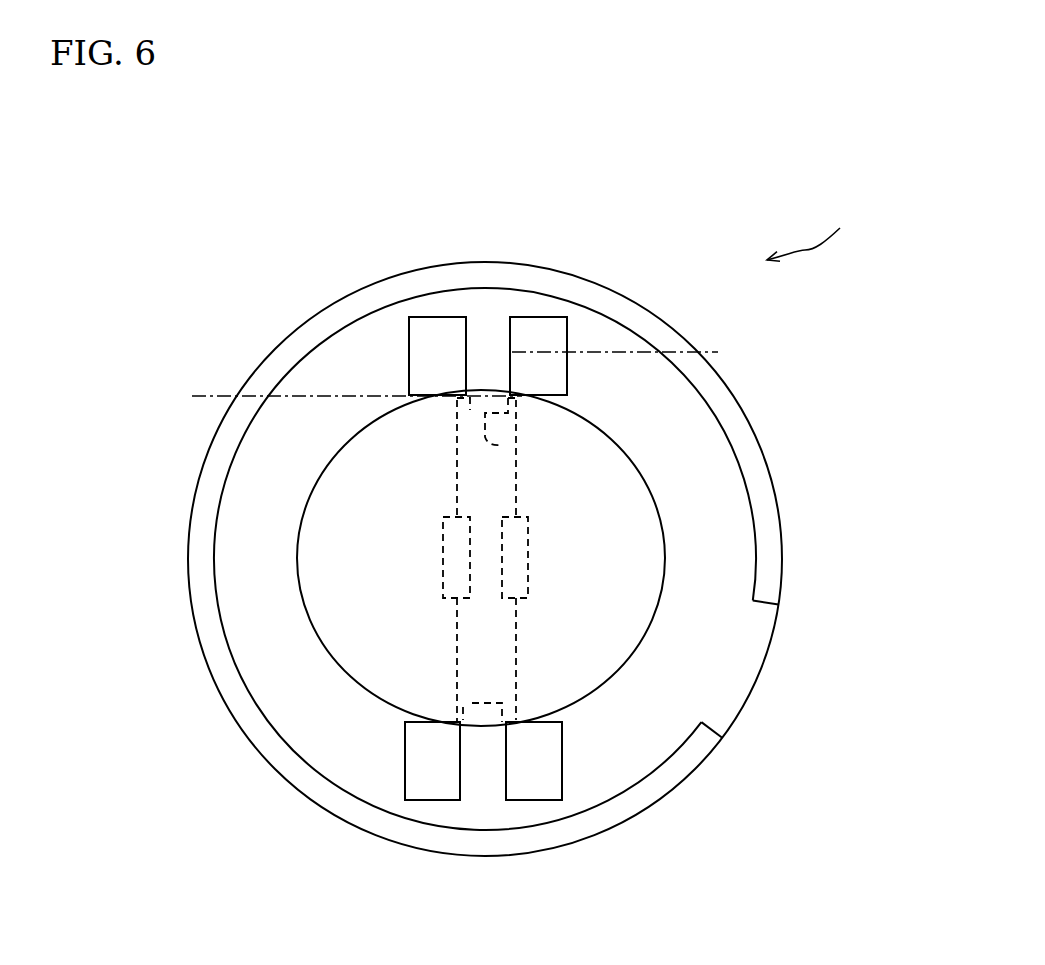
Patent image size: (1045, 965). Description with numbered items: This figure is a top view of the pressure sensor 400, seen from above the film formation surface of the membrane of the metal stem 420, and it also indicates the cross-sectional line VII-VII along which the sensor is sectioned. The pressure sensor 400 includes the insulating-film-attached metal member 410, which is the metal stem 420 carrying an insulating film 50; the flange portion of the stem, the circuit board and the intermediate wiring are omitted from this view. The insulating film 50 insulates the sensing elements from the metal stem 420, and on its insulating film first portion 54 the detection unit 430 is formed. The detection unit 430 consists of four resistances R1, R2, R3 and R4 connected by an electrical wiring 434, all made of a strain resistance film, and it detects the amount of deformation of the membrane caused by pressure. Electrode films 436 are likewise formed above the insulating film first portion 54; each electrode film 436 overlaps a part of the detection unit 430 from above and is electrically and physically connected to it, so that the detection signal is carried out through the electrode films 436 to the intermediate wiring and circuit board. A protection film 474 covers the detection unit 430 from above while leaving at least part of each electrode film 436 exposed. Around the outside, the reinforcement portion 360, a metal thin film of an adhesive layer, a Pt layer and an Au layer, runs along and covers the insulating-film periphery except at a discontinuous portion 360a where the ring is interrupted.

The pressure sensor 400 is at (826, 227).
The insulating-film-attached metal member 410 is at (797, 512).
The reinforcement portion 360 is at (735, 437).
The discontinuous portion 360a is at (763, 672).
The metal stem 420 is at (578, 845).
The insulating film 50 is at (310, 376).
The insulating film first portion 54 is at (248, 588).
The protection film 474 is at (325, 650).
The electrode films 436 is at (428, 338).
The detection unit 430 is at (540, 418).
The electrical wiring 434 is at (457, 458).
The resistance R1 is at (443, 560).
The resistance R2 is at (528, 560).
The resistance R3 is at (500, 445).
The resistance R4 is at (489, 703).
The cross-sectional line VII- VII is at (449, 376).